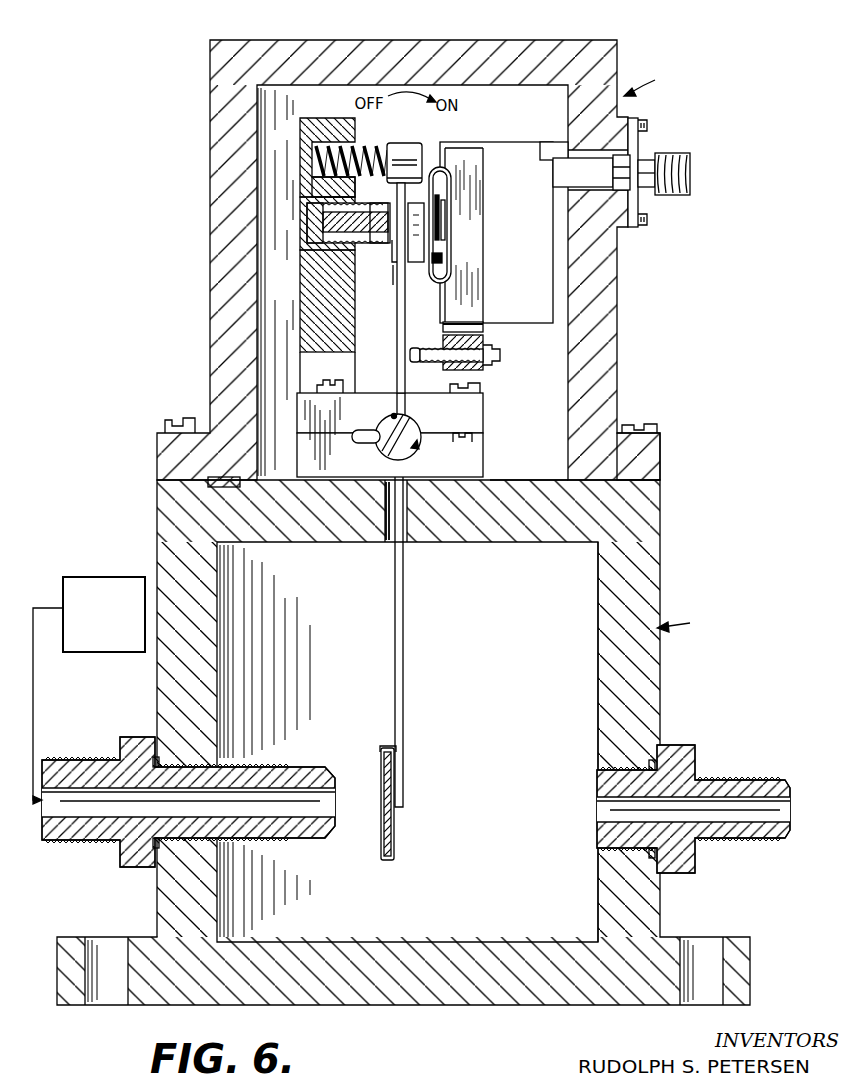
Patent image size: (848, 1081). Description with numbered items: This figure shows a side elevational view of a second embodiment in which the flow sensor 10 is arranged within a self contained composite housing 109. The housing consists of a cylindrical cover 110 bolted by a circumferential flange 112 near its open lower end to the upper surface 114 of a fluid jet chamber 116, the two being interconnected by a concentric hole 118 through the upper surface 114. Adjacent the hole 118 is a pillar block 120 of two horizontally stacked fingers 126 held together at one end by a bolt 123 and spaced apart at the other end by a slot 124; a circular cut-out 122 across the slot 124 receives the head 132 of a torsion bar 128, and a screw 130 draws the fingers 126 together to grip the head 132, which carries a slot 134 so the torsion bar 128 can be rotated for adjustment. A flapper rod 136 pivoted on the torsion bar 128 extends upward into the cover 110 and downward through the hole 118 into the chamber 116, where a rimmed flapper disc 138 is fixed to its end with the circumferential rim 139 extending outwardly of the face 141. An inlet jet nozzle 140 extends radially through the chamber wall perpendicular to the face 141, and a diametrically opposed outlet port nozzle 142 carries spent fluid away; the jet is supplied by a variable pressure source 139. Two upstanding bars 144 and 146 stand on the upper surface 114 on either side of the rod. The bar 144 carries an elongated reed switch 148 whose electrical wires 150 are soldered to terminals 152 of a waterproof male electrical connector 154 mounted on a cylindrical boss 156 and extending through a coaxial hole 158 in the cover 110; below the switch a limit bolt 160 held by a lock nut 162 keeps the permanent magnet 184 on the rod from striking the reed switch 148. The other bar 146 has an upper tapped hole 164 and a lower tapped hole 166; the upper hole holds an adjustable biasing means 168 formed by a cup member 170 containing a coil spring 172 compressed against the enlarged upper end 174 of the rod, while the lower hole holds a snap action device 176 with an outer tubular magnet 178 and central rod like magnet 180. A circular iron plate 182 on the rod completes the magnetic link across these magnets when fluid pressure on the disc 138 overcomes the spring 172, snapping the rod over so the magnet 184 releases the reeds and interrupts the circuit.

The flow sensor 10 is at (650, 82).
The composite housing 109 is at (403, 742).
The cylindrical cover 110 is at (606, 306).
The circumferential flange 112 is at (658, 455).
The upper surface 114 is at (535, 480).
The fluid jet chamber 116 is at (615, 709).
The concentric hole 118 is at (388, 530).
The pillar block 120 is at (472, 460).
The circular cut-out 122 is at (395, 414).
The bolt 123 is at (322, 386).
The slot 124 is at (473, 438).
The fingers 126 is at (341, 420).
The torsion bar 128 is at (414, 450).
The screw 130 is at (477, 391).
The head 132 is at (386, 438).
The slot 134 is at (408, 428).
The flapper rod 136 is at (398, 668).
The rimmed flapper disc 138 is at (389, 856).
The circumferential rim 139 is at (118, 577).
The inlet jet nozzle 140 is at (268, 771).
The face 141 is at (382, 772).
The outlet port nozzle 142 is at (742, 833).
The upstanding bar 144 is at (471, 337).
The upstanding bar 146 is at (313, 298).
The reed switch 148 is at (441, 182).
The electrical wires 150 is at (558, 188).
The terminals 152 is at (622, 160).
The waterproof male electrical connector 154 is at (692, 178).
The cylindrical boss 156 is at (627, 222).
The coaxial hole 158 is at (556, 152).
The limit bolt 160 is at (430, 350).
The lock nut 162 is at (486, 372).
The upper tapped hole 164 is at (313, 126).
The lower tapped hole 166 is at (337, 250).
The adjustable biasing means 168 is at (322, 176).
The cup member 170 is at (350, 138).
The coil spring 172 is at (362, 149).
The enlarged upper end 174 is at (411, 153).
The snap action device 176 is at (318, 214).
The tubular magnet 178 is at (376, 213).
The rod like magnet 180 is at (395, 252).
The circular iron plate 182 is at (378, 281).
The permanent magnet 184 is at (418, 212).